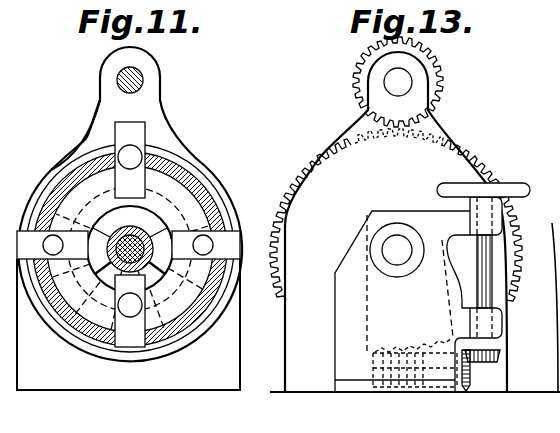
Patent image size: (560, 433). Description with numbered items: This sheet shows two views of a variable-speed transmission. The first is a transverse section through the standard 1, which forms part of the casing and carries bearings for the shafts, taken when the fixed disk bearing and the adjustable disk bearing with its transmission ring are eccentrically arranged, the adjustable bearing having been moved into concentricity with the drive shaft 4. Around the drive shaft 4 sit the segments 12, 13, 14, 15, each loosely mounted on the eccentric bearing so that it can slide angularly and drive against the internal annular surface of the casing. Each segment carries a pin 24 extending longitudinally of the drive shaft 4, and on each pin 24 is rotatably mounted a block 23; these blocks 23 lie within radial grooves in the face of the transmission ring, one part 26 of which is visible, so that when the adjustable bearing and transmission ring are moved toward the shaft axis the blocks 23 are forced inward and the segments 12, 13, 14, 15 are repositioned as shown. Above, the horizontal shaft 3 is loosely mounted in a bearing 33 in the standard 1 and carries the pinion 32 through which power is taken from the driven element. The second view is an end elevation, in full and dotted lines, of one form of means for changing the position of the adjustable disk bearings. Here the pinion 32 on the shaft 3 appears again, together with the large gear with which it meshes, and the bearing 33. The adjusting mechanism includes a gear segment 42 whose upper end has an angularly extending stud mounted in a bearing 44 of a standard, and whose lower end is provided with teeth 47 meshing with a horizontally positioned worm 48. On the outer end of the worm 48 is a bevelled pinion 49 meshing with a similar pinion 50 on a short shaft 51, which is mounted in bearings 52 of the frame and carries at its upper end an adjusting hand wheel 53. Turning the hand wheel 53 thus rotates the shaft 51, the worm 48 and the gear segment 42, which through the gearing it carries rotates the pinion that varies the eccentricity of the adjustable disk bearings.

In FIG. 11, the end standard 1 is at (158, 112).
In FIG. 11, the horizontal shaft 3 is at (141, 78).
In FIG. 13, the horizontal shaft 3 is at (389, 81).
In FIG. 11, the drive shaft 4 is at (124, 235).
In FIG. 11, the segment 12 is at (178, 143).
In FIG. 11, the segment 13 is at (214, 186).
In FIG. 11, the segment 14 is at (96, 312).
In FIG. 11, the segment 15 is at (45, 194).
In FIG. 11, the block 23 is at (127, 124).
In FIG. 11, the pin 24 is at (126, 148).
In FIG. 11, the transmission ring part 26 is at (190, 173).
In FIG. 13, the pinion 32 is at (440, 86).
In FIG. 11, the bearing 33 is at (106, 65).
In FIG. 13, the bearing 33 is at (486, 161).
In FIG. 13, the gear segment 42 is at (366, 308).
In FIG. 13, the bearing 44 is at (389, 231).
In FIG. 13, the teeth 47 is at (366, 352).
In FIG. 13, the worm 48 is at (394, 392).
In FIG. 13, the bevelled pinion 49 is at (468, 386).
In FIG. 13, the pinion 50 is at (498, 353).
In FIG. 13, the short shaft 51 is at (486, 262).
In FIG. 13, the bearing 52 is at (497, 222).
In FIG. 13, the adjusting hand wheel 53 is at (516, 189).